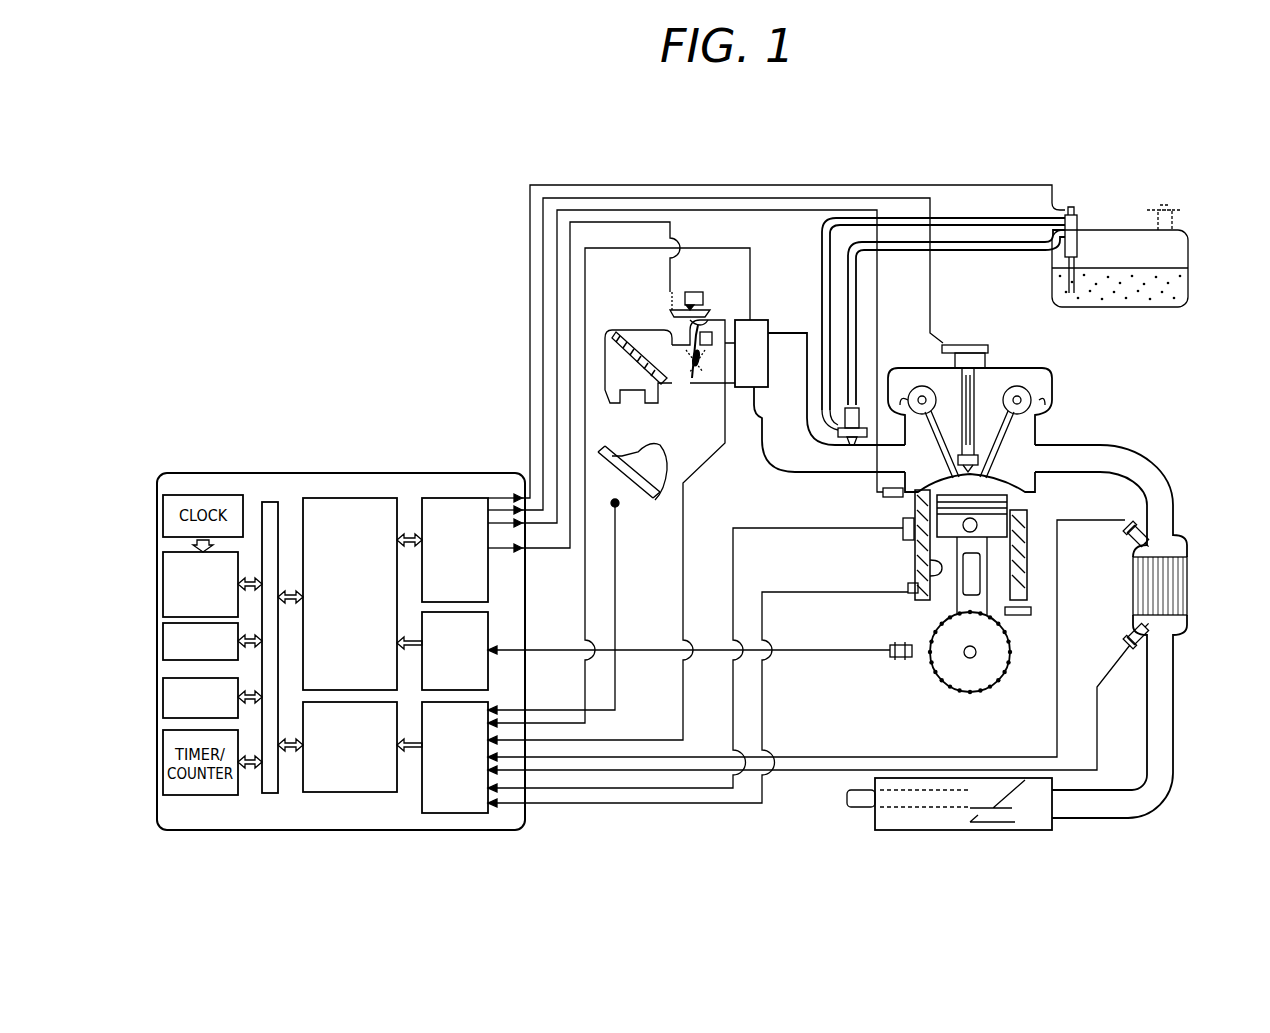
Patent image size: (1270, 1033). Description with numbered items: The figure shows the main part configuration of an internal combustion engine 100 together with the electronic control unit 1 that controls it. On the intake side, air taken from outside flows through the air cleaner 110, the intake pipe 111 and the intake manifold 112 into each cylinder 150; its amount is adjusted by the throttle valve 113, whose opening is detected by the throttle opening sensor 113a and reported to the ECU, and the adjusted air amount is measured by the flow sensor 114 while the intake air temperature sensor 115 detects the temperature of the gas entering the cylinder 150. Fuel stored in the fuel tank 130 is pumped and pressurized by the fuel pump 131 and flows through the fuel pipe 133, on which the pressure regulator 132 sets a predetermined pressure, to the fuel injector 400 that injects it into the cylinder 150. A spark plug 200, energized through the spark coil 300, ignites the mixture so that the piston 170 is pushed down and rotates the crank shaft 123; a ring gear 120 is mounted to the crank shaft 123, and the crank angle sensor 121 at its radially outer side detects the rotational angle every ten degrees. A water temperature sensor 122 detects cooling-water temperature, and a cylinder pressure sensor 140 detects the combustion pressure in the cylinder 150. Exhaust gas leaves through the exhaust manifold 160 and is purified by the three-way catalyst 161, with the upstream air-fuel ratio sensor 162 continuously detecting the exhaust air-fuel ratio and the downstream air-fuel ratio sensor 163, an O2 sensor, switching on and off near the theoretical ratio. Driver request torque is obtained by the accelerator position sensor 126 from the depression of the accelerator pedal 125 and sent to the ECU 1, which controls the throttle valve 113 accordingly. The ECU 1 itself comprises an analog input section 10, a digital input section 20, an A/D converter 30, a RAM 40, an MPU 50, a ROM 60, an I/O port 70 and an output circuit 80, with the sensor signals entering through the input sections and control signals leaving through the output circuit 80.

The electronic control unit 1 is at (482, 474).
The analog input section 10 is at (455, 830).
The digital input section 20 is at (505, 624).
The A/D converter 30 is at (303, 790).
The RAM 40 is at (163, 695).
The MPU 50 is at (163, 580).
The ROM 60 is at (163, 640).
The I/O port 70 is at (345, 497).
The output circuit 80 is at (440, 497).
The internal combustion engine 100 is at (886, 126).
The air cleaner 110 is at (633, 340).
The intake pipe 111 is at (805, 333).
The intake manifold 112 is at (762, 455).
The throttle valve 113 is at (700, 385).
The throttle opening sensor 113a is at (710, 322).
The flow sensor 114 is at (754, 320).
The intake air temperature sensor 115 is at (1020, 617).
The ring gear 120 is at (945, 678).
The crank angle sensor 121 is at (898, 643).
The water temperature sensor 122 is at (908, 588).
The crank shaft 123 is at (967, 659).
The accelerator pedal 125 is at (603, 450).
The accelerator position sensor 126 is at (617, 508).
The fuel tank 130 is at (1186, 235).
The fuel pump 131 is at (1078, 215).
The pressure regulator 132 is at (840, 442).
The fuel pipe 133 is at (990, 240).
The cylinder pressure sensor 140 is at (903, 530).
The cylinder 150 is at (918, 568).
The exhaust manifold 160 is at (1146, 468).
The three-way catalyst 161 is at (1133, 585).
The upstream air-fuel ratio sensor 162 is at (1125, 540).
The downstream air-fuel ratio sensor 163 is at (1125, 637).
The piston 170 is at (1005, 522).
The spark plug 200 is at (985, 446).
The spark coil 300 is at (985, 350).
The fuel injector 400 is at (893, 498).